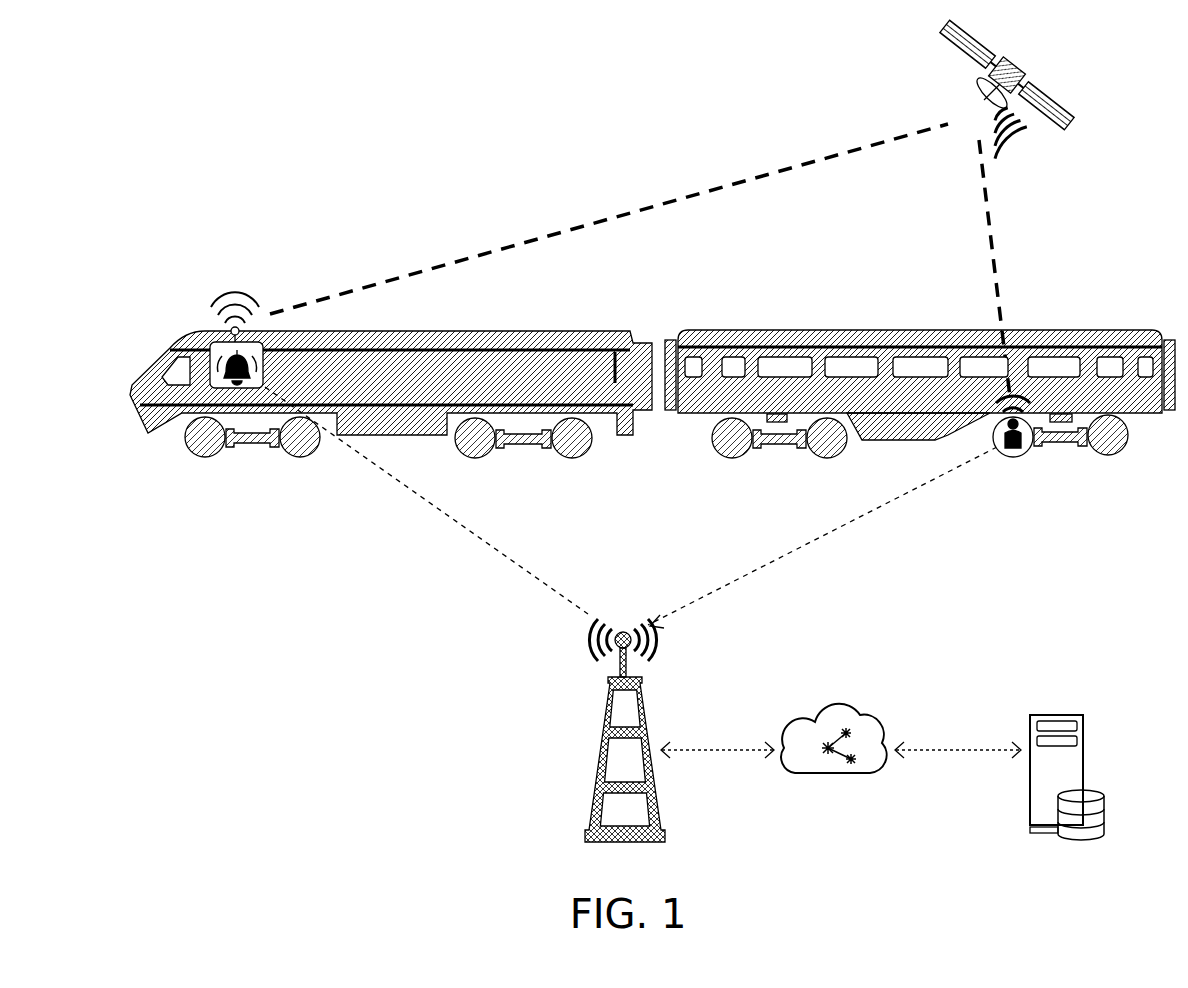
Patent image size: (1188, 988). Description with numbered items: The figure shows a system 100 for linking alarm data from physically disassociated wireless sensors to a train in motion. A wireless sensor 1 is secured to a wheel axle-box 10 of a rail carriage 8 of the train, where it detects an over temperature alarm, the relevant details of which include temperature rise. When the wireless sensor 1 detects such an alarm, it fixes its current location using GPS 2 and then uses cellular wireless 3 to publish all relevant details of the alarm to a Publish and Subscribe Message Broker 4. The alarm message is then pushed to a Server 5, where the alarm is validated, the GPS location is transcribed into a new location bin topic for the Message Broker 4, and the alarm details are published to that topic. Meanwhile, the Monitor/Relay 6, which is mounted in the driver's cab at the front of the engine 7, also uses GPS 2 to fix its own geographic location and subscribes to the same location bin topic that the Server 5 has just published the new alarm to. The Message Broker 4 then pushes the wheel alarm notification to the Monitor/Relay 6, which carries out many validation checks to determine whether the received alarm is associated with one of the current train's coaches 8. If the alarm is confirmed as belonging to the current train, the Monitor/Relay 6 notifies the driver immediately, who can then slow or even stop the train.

The system 100 is at (510, 170).
The wireless sensor 1 is at (1015, 466).
The wheel axle-box 10 is at (1025, 458).
The GPS 2 is at (952, 153).
The cellular wireless 3 is at (626, 617).
The Message Broker 4 is at (852, 697).
The Server 5 is at (1055, 702).
The Monitor/Relay 6 is at (238, 288).
The engine 7 is at (391, 339).
The rail carriage 8 is at (920, 422).